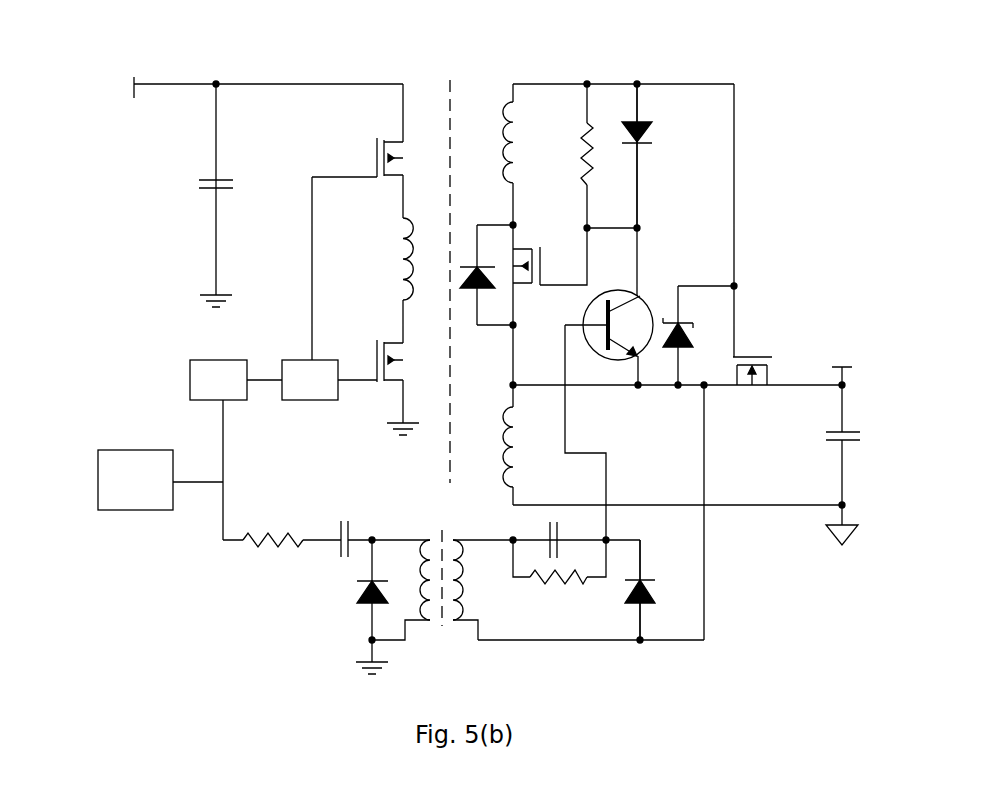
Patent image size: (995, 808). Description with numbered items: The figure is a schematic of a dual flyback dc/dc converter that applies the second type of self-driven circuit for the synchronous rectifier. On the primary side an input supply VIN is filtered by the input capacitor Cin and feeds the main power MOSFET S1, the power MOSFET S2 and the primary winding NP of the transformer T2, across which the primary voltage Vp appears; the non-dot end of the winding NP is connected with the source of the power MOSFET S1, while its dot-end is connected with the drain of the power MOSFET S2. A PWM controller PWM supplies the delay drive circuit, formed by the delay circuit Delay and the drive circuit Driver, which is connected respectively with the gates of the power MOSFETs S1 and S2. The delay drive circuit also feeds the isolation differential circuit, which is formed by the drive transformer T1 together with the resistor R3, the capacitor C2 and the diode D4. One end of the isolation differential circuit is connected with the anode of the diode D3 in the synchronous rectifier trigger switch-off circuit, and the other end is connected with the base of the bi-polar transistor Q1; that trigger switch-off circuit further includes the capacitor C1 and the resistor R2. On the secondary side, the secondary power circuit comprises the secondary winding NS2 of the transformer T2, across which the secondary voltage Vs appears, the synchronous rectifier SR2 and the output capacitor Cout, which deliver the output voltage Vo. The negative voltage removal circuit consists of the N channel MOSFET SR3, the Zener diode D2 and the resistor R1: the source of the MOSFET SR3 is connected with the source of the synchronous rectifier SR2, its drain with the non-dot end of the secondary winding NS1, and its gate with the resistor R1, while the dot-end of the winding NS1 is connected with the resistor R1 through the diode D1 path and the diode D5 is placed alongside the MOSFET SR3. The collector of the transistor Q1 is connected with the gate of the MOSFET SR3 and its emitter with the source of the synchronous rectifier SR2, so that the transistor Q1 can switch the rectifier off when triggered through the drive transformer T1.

The input voltage terminal VIN is at (116, 86).
The input capacitor Cin is at (235, 186).
The main power MOSFET S1 is at (372, 157).
The power MOSFET S2 is at (372, 361).
The primary winding NP is at (390, 262).
The primary voltage Vp is at (350, 263).
The delay circuit Delay is at (218, 380).
The drive circuit Driver is at (310, 380).
The PWM controller PWM is at (135, 480).
The resistor R3 is at (273, 522).
The capacitor C2 is at (344, 527).
The diode D4 is at (352, 590).
The drive transformer T1 is at (439, 566).
The transformer T2 is at (465, 154).
The secondary winding NS1 is at (532, 141).
The resistor R1 is at (570, 154).
The diode D1 is at (655, 156).
The N channel MOSFET SR3 is at (544, 266).
The diode D5 is at (477, 290).
The bi-polar transistor Q1 is at (594, 337).
The Zener diode D2 is at (689, 335).
The synchronous rectifier SR2 is at (752, 388).
The output voltage Vo is at (842, 368).
The output capacitor Cout is at (814, 446).
The secondary winding NS2 is at (502, 445).
The secondary voltage Vs is at (533, 457).
The capacitor C1 is at (535, 536).
The resistor R2 is at (559, 576).
The diode D3 is at (650, 590).